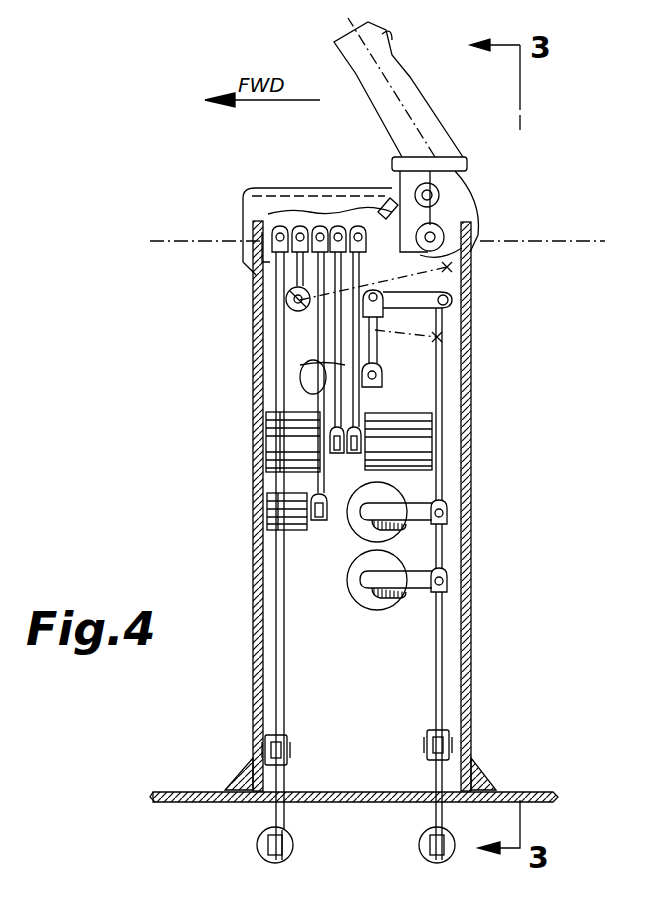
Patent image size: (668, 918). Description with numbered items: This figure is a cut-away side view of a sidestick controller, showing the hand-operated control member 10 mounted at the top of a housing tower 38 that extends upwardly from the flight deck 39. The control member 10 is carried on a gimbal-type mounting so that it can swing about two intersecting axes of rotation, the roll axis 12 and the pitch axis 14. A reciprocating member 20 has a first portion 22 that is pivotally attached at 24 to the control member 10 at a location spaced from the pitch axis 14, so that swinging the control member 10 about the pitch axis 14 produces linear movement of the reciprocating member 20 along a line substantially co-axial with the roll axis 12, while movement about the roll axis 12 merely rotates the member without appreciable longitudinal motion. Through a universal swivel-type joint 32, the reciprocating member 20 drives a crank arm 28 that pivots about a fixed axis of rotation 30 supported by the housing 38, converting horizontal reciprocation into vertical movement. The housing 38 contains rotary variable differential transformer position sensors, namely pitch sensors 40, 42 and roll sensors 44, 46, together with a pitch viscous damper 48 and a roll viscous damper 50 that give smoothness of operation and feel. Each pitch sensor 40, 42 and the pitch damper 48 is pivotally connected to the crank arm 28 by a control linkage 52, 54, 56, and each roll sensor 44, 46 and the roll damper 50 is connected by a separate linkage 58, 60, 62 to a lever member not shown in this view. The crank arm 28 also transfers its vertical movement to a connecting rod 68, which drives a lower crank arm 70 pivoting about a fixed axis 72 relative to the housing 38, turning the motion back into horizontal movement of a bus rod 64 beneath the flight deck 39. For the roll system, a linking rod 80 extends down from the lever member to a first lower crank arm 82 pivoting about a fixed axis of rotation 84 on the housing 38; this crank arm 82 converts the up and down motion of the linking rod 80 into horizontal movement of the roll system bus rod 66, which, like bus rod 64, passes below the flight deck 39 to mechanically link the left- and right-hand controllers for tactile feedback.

The control member 10 is at (418, 133).
The roll axis of rotation 12 is at (168, 241).
The pitch axis of rotation 14 is at (440, 240).
The reciprocating member 20 is at (375, 238).
The first portion of reciprocating member 22 is at (384, 200).
The pivotal attachment 24 is at (432, 196).
The crank arm 28 is at (300, 276).
The fixed axis of rotation 30 is at (290, 303).
The universal swivel-type joint 32 is at (295, 232).
The housing tower 38 is at (466, 684).
The flight deck 39 is at (535, 792).
The pitch sensor 40 is at (405, 506).
The pitch sensor 42 is at (405, 563).
The roll sensor 44 is at (300, 440).
The roll sensor 46 is at (420, 444).
The pitch viscous damper 48 is at (330, 373).
The roll viscous damper 50 is at (292, 504).
The control linkage 52 is at (447, 492).
The control linkage 54 is at (442, 532).
The control linkage 56 is at (400, 366).
The linkage 58 is at (330, 404).
The linkage 60 is at (405, 405).
The linkage 62 is at (318, 470).
The bus rod 64 is at (452, 840).
The roll system bus rod 66 is at (256, 845).
The connecting rod 68 is at (443, 620).
The lower crank arm 70 is at (440, 780).
The fixed axis 72 is at (455, 745).
The linking rod 80 is at (276, 683).
The first lower crank arm 82 is at (245, 780).
The fixed axis of rotation 84 is at (268, 748).